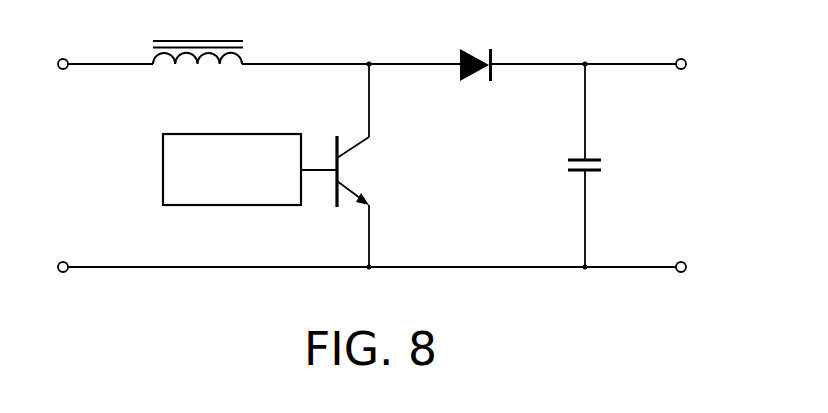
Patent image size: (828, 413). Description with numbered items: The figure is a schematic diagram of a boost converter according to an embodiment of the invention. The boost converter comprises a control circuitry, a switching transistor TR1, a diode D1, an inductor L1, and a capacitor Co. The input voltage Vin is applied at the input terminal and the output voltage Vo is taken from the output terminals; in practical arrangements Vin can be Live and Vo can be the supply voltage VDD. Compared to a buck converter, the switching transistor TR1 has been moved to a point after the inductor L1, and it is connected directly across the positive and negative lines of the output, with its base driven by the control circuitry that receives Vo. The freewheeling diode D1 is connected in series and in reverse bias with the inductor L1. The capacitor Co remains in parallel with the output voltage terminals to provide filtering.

The inductor L1 is at (198, 40).
The diode D1 is at (475, 49).
The switching transistor TR1 is at (354, 165).
The capacitor Co is at (599, 165).
The input voltage Vin is at (62, 52).
The output voltage Vo is at (122, 170).